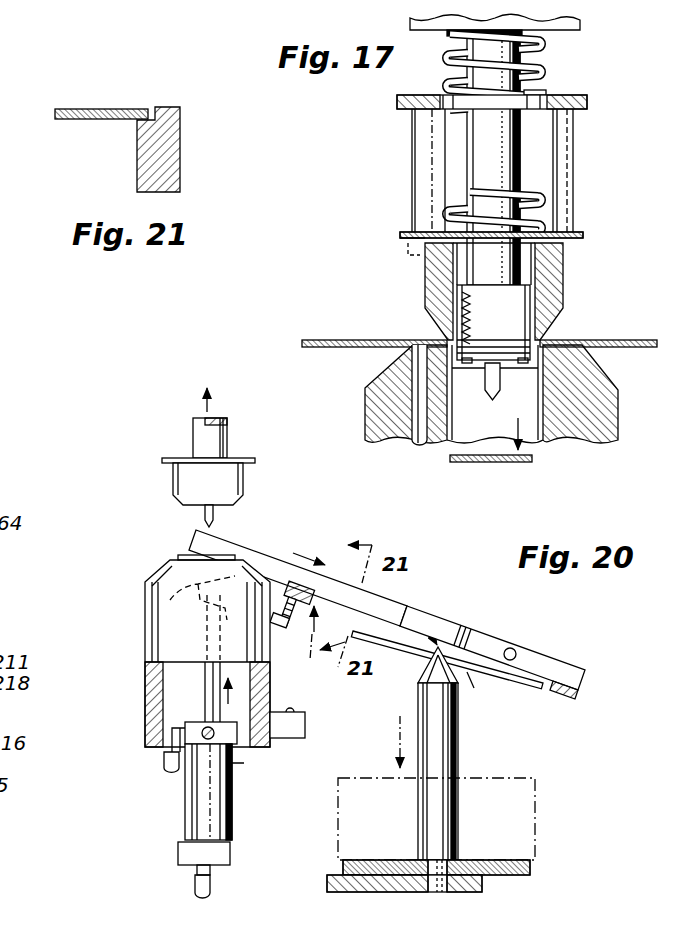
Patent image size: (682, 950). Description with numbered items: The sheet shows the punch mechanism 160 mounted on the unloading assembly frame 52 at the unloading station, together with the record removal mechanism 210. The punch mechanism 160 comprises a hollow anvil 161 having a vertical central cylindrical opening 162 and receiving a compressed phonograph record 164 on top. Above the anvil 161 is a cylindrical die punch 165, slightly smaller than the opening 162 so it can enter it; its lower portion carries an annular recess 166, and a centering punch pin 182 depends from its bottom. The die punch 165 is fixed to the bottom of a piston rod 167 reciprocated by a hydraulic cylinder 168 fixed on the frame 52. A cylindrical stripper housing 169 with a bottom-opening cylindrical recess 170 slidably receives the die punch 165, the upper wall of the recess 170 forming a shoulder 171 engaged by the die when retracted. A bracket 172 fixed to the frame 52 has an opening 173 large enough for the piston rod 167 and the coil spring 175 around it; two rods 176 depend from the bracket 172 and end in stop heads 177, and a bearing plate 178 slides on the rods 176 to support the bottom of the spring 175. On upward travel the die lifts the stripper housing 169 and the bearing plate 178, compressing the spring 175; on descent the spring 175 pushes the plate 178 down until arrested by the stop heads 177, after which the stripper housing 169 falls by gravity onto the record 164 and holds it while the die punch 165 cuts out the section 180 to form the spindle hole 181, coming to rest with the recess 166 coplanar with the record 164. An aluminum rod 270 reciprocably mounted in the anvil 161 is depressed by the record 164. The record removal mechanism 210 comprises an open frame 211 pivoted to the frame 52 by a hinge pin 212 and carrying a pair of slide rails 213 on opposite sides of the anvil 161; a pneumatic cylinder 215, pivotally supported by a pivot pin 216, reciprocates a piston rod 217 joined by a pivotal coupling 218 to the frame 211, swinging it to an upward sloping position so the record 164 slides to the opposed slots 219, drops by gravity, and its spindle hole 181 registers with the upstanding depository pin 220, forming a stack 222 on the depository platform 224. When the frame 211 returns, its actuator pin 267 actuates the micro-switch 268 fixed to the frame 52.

In FIG. 17, the hydraulic cylinder 168 is at (580, 25).
In FIG. 17, the coil spring 175 is at (544, 44).
In FIG. 17, the opening 173 is at (533, 93).
In FIG. 17, the bracket 172 is at (587, 101).
In FIG. 17, the rods 176 is at (573, 128).
In FIG. 17, the piston rod 167 is at (506, 143).
In FIG. 20, the piston rod 167 is at (193, 438).
In FIG. 17, the punch mechanism 160 is at (586, 238).
In FIG. 20, the punch mechanism 160 is at (129, 581).
In FIG. 17, the shoulder 171 is at (455, 247).
In FIG. 17, the bearing plate 178 is at (397, 237).
In FIG. 20, the bearing plate 178 is at (248, 458).
In FIG. 17, the stop heads 177 is at (583, 245).
In FIG. 17, the cylindrical recess 170 is at (447, 273).
In FIG. 17, the stripper housing 169 is at (428, 303).
In FIG. 20, the stripper housing 169 is at (220, 492).
In FIG. 17, the die punch 165 is at (512, 312).
In FIG. 17, the annular recess 166 is at (497, 343).
In FIG. 17, the spindle hole 181 is at (540, 347).
In FIG. 20, the spindle hole 181 is at (467, 673).
In FIG. 17, the phonograph record 164 is at (348, 347).
In FIG. 21, the phonograph record 164 is at (127, 86).
In FIG. 20, the phonograph record 164 is at (527, 688).
In FIG. 17, the anvil 161 is at (618, 414).
In FIG. 20, the anvil 161 is at (198, 654).
In FIG. 17, the centering punch pin 182 is at (487, 388).
In FIG. 20, the centering punch pin 182 is at (203, 514).
In FIG. 17, the aluminum rod 270 is at (410, 438).
In FIG. 17, the cylindrical opening 162 is at (530, 422).
In FIG. 17, the section 180 is at (520, 462).
In FIG. 21, the slide rails 213 is at (170, 107).
In FIG. 20, the slide rails 213 is at (240, 546).
In FIG. 20, the pivotal coupling 218 is at (200, 618).
In FIG. 20, the piston rod 217 is at (205, 713).
In FIG. 20, the actuator pin 267 is at (290, 636).
In FIG. 20, the micro-switch 268 is at (300, 729).
In FIG. 20, the pivot pin 216 is at (223, 750).
In FIG. 20, the pneumatic cylinder 215 is at (210, 800).
In FIG. 20, the slots 219 is at (453, 627).
In FIG. 20, the record removal mechanism 210 is at (481, 611).
In FIG. 20, the hinge pin 212 is at (512, 647).
In FIG. 20, the open frame 211 is at (552, 662).
In FIG. 20, the depository pin 220 is at (458, 748).
In FIG. 20, the stack 222 is at (518, 778).
In FIG. 20, the depository platform 224 is at (530, 870).
In FIG. 20, the unloading assembly frame 52 is at (327, 883).